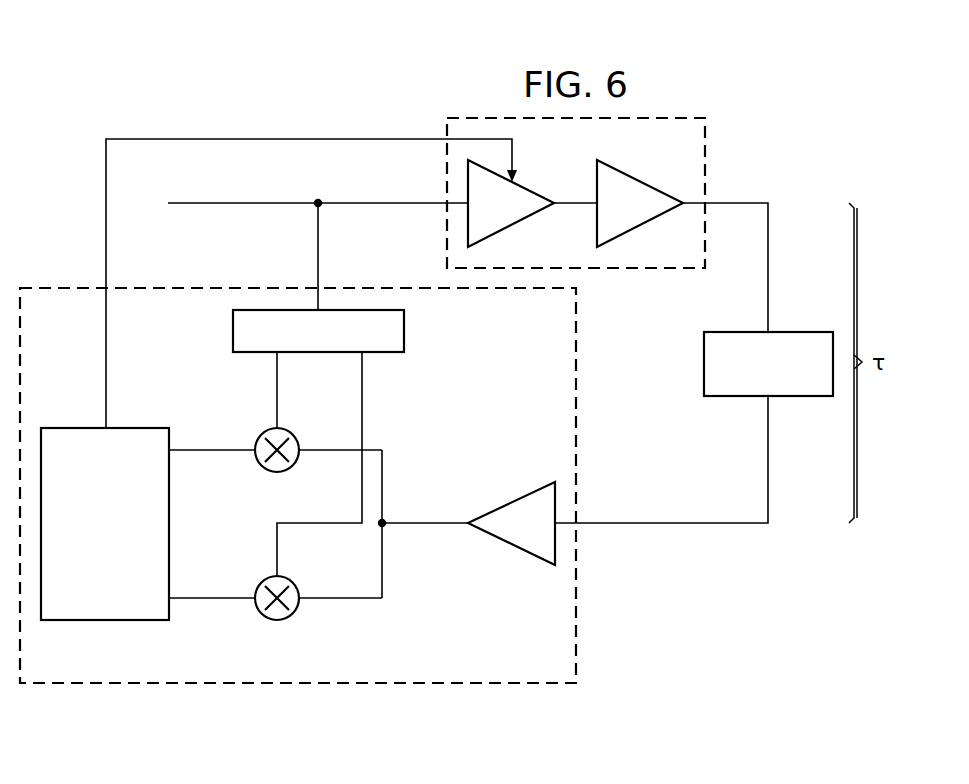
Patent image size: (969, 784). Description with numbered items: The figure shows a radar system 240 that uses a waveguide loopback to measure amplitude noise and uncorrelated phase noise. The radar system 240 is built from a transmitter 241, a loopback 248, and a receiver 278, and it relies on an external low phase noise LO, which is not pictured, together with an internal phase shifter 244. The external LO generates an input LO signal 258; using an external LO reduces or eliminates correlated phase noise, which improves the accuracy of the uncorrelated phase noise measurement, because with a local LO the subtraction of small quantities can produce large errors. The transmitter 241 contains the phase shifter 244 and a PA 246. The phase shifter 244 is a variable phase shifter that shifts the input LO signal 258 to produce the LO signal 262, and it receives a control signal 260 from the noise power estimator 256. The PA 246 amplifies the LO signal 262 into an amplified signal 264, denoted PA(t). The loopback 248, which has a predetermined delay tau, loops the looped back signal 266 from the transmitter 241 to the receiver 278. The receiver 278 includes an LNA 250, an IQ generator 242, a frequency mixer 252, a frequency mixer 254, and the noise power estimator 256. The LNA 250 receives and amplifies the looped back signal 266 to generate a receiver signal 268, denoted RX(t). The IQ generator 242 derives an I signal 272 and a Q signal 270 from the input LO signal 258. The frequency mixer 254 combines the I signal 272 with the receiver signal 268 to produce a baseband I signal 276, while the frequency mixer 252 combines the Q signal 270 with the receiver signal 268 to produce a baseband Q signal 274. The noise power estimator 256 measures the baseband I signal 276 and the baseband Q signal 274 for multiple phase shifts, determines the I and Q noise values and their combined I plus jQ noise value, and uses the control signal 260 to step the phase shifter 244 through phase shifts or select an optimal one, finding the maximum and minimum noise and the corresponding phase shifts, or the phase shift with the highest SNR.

The radar system 240 is at (782, 104).
The transmitter 241 is at (605, 278).
The IQ generator 242 is at (233, 331).
The phase shifter 244 is at (531, 190).
The PA 246 is at (645, 183).
The loopback 248 is at (798, 332).
The LNA 250 is at (512, 545).
The frequency mixer 252 is at (266, 617).
The frequency mixer 254 is at (268, 469).
The noise power estimator 256 is at (105, 524).
The input LO signal 258 is at (246, 205).
The control signal 260 is at (232, 138).
The LO signal 262 is at (575, 207).
The amplified signal 264 is at (768, 268).
The looped back signal 266 is at (768, 462).
The receiver signal 268 is at (430, 526).
The Q signal 270 is at (362, 422).
The I signal 272 is at (277, 392).
The baseband Q signal 274 is at (212, 600).
The baseband I signal 276 is at (213, 453).
The receiver 278 is at (586, 552).